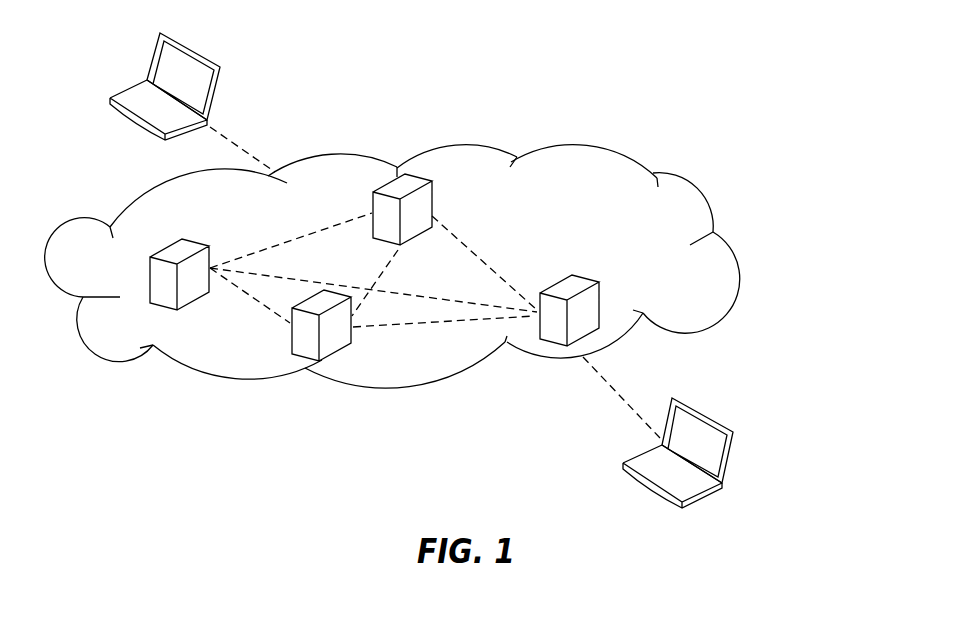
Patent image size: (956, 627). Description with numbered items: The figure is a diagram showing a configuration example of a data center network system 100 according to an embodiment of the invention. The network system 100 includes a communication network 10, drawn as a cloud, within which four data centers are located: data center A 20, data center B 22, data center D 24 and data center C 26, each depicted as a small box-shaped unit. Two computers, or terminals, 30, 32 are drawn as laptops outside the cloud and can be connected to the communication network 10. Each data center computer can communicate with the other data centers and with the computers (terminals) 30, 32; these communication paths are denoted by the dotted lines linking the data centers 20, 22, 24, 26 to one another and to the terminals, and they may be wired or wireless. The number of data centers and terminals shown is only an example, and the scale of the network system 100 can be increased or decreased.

The network system 100 is at (523, 20).
The communication network 10 is at (723, 250).
The data center A 20 is at (192, 240).
The data center B 22 is at (418, 203).
The data center D 24 is at (343, 335).
The data center C 26 is at (560, 288).
The computer (terminal) 30 is at (215, 65).
The computer (terminal) 32 is at (737, 430).